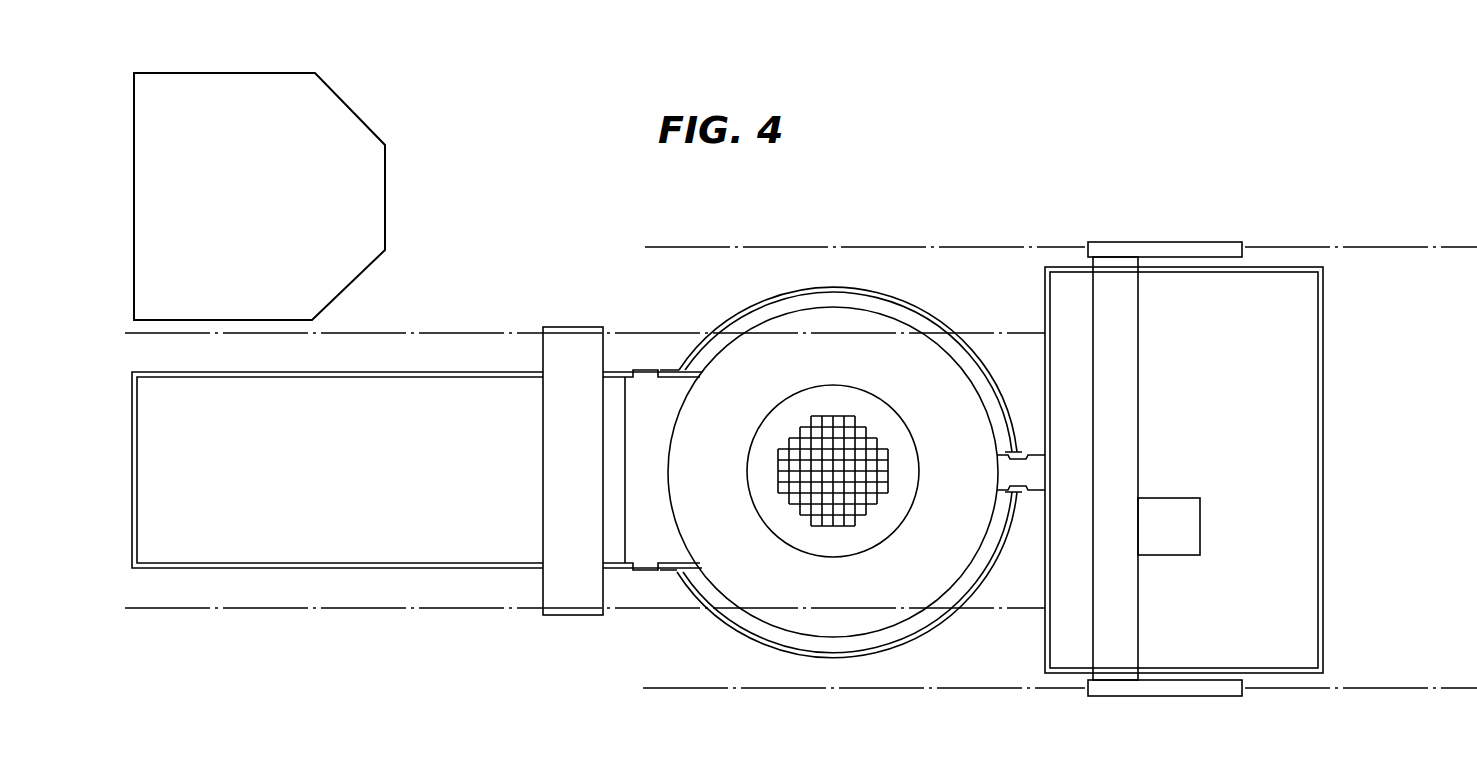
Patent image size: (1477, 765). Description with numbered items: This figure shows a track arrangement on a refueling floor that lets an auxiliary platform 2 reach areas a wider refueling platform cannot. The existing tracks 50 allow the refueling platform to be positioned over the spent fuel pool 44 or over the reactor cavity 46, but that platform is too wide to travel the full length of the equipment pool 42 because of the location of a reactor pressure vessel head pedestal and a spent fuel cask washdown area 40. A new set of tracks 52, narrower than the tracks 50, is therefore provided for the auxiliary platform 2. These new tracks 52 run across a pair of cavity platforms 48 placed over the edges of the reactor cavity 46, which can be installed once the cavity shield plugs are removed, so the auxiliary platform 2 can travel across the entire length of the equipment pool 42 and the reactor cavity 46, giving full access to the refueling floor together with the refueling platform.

The auxiliary platform 2 is at (522, 508).
The spent fuel cask washdown area 40 is at (320, 111).
The equipment pool 42 is at (311, 535).
The spent fuel pool 44 is at (1291, 362).
The reactor cavity 46 is at (930, 565).
The cavity platforms 48 is at (806, 322).
The tracks 50 is at (973, 245).
The new set of tracks 52 is at (470, 610).